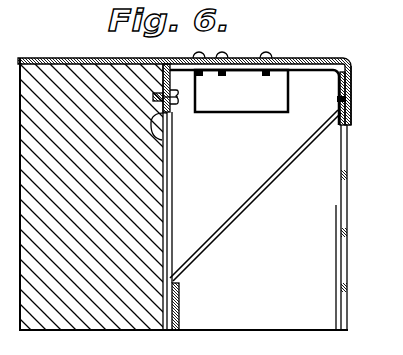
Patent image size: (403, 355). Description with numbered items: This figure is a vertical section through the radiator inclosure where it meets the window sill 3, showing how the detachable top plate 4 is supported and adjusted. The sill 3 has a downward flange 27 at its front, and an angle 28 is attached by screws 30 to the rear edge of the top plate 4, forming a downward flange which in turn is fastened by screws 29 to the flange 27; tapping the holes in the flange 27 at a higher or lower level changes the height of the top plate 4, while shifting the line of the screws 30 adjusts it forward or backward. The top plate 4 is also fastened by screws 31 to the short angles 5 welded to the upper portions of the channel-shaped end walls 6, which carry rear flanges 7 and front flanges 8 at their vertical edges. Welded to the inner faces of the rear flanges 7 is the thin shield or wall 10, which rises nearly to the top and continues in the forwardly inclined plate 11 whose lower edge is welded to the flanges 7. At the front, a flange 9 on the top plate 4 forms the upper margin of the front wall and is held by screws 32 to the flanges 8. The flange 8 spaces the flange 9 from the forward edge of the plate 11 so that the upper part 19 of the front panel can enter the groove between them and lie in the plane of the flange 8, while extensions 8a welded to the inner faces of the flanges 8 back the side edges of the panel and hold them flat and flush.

The window sill 3 is at (90, 58).
The top plate 4 is at (306, 62).
The short angles 5 is at (254, 97).
The end walls 6 is at (235, 166).
The flanges 7 is at (172, 208).
The flanges 8 is at (339, 88).
The extensions 8a is at (338, 250).
The flange 9 is at (352, 113).
The thin shield or wall 10 is at (180, 318).
The forwardly inclined plate 11 is at (256, 205).
The upper part of the panel 19 is at (348, 175).
The downward flange 27 is at (160, 141).
The angle 28 is at (182, 64).
The screws 29 is at (180, 104).
The screws 30 is at (204, 60).
The screws 31 is at (271, 50).
The screws 32 is at (337, 99).